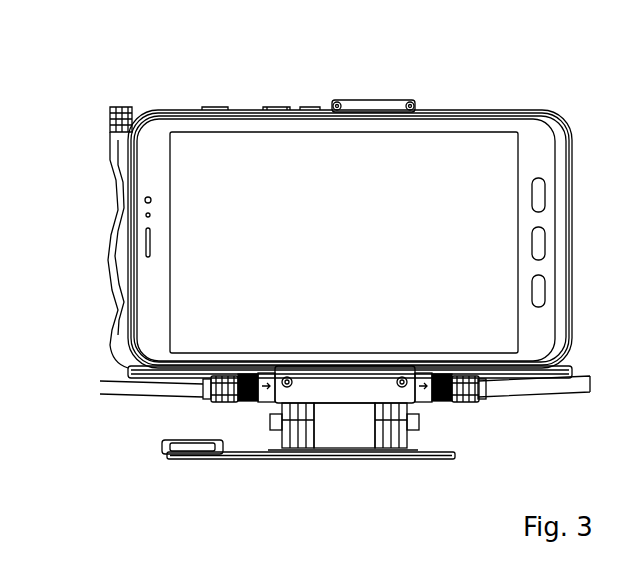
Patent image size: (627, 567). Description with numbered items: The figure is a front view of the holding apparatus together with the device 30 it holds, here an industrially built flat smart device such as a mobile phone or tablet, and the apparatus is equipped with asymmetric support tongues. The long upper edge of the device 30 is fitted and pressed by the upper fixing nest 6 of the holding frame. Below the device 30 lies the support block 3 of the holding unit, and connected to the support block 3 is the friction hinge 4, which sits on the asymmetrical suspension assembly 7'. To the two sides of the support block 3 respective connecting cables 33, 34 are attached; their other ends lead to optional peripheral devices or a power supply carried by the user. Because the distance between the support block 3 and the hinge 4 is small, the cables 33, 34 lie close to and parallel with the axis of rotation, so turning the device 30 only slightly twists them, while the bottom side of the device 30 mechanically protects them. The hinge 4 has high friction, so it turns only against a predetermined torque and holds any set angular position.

The device 30 is at (493, 185).
The upper fixing nest 6 is at (357, 100).
The support block 3 is at (422, 395).
The friction hinge 4 is at (337, 425).
The suspension assembly 7' is at (308, 471).
The connecting cable 33 is at (172, 400).
The connecting cable 34 is at (518, 388).